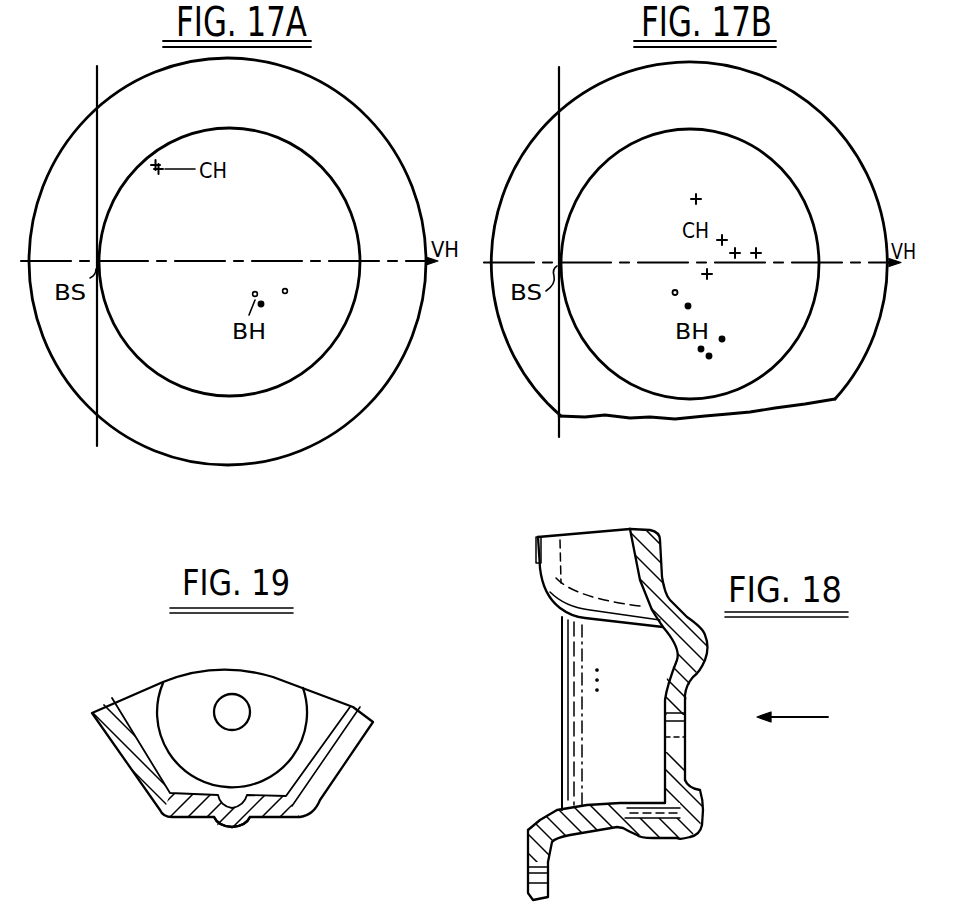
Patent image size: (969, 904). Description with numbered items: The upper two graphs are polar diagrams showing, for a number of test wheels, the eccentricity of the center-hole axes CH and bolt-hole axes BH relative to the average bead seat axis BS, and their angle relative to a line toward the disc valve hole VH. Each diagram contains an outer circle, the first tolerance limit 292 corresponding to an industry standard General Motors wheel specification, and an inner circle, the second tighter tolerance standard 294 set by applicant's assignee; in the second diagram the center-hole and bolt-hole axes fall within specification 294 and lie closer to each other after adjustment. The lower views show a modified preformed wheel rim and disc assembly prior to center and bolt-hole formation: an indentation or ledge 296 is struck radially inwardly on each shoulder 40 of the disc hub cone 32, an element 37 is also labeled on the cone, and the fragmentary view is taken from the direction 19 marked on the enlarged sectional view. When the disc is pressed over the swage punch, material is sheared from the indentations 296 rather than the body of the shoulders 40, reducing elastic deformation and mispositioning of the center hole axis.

In FIG. 17A, the first tolerance limit 292 is at (366, 119).
In FIG. 17B, the first tolerance limit 292 is at (851, 111).
In FIG. 17A, the second tighter tolerance standard 294 is at (234, 397).
In FIG. 17B, the second tighter tolerance standard 294 is at (776, 364).
In FIG. 19, the rim wall of cone clip 37 is at (278, 687).
In FIG. 18, the rim wall of cone clip 37 is at (672, 678).
In FIG. 19, the shoulder 40 is at (282, 808).
In FIG. 18, the shoulder 40 is at (595, 825).
In FIG. 19, the indentation or ledge 296 is at (228, 822).
In FIG. 18, the indentation or ledge 296 is at (668, 830).
In FIG. 18, the disc hub cone 32 is at (533, 852).
In FIG. 18, the direction 19 is at (793, 717).